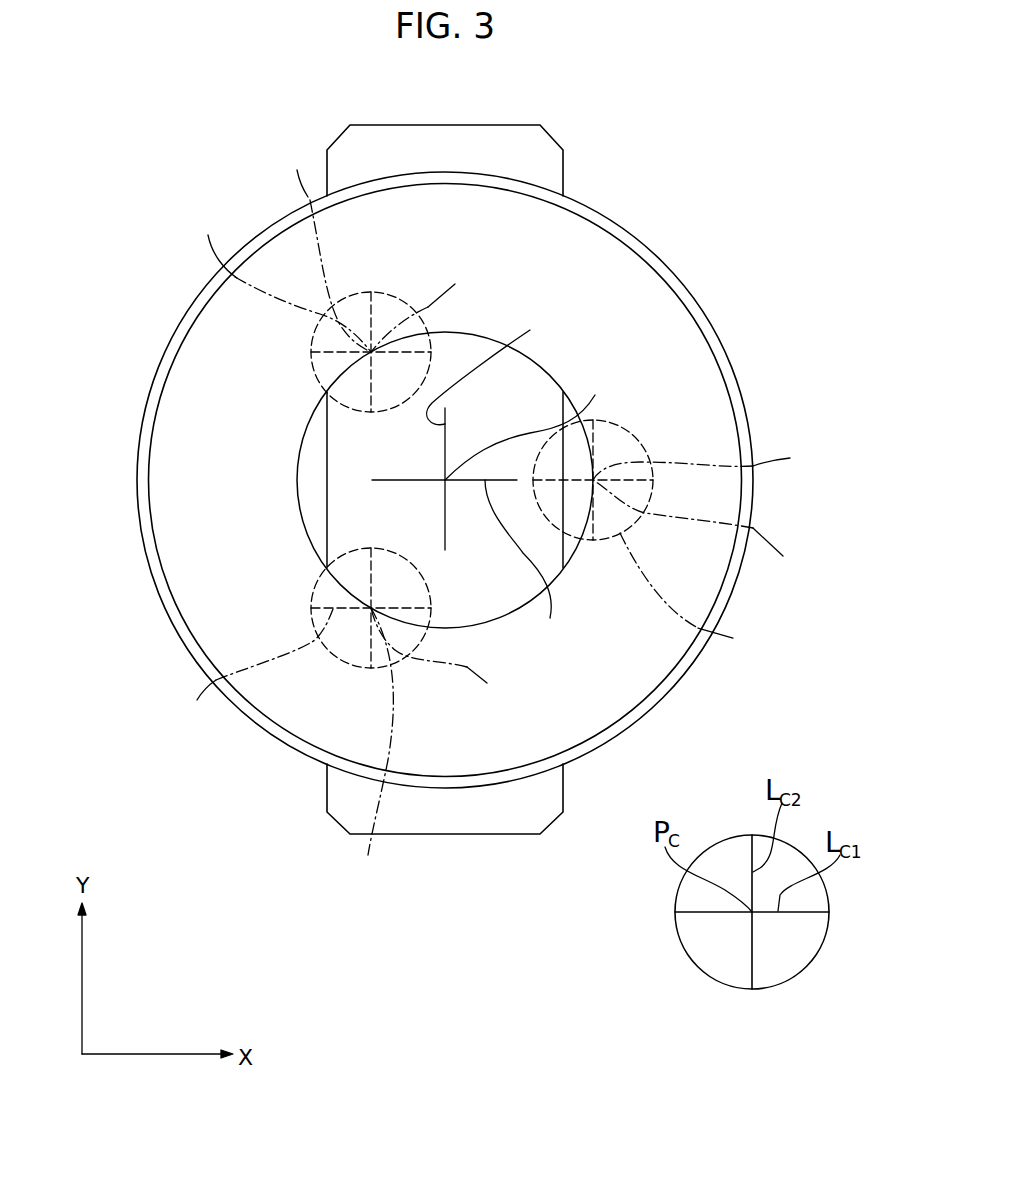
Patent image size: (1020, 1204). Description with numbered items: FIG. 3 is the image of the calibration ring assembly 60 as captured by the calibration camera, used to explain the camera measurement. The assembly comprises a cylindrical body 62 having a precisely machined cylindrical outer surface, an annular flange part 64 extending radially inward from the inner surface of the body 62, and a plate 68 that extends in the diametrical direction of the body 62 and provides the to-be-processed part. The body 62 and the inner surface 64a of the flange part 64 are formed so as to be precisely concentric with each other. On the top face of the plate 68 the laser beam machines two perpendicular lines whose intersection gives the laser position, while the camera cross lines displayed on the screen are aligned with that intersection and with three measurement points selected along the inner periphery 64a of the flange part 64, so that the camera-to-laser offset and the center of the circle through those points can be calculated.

The calibration ring assembly 60 is at (713, 248).
The cylindrical body 62 is at (186, 323).
The annular flange part 64 is at (210, 468).
The inner surface of flange part 64a is at (297, 470).
The plate 68 is at (543, 170).